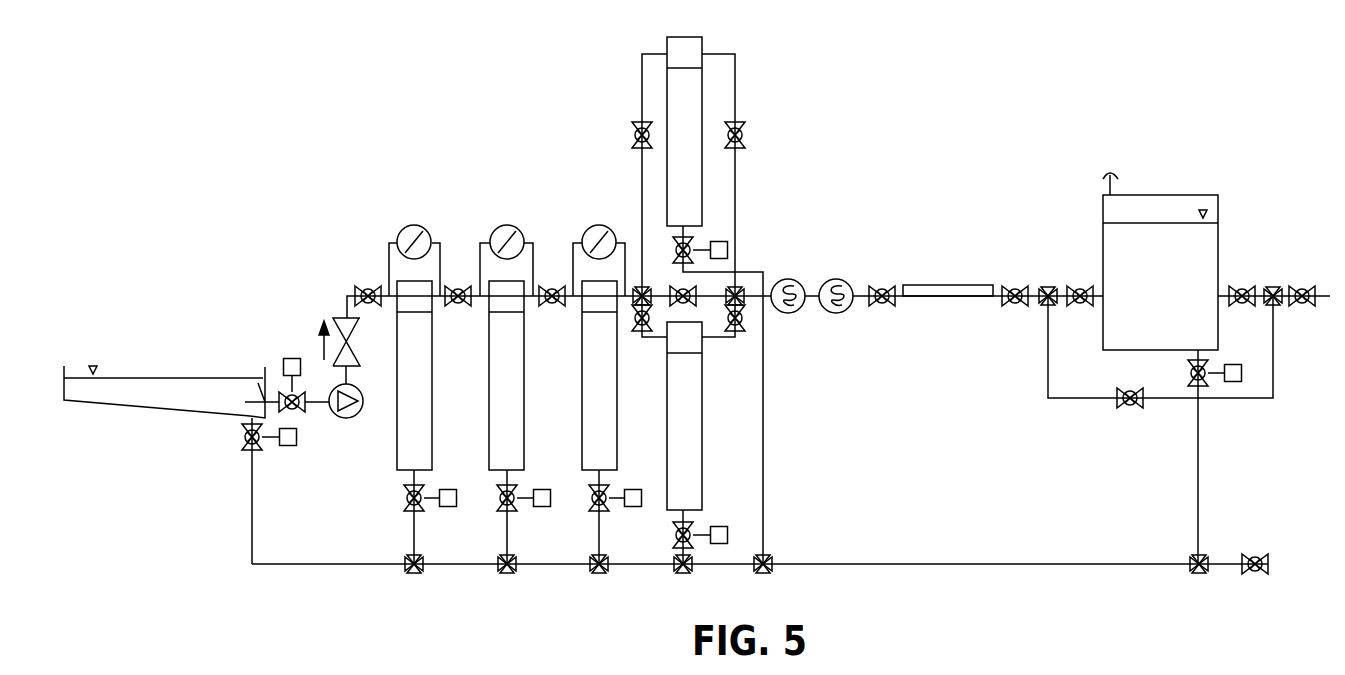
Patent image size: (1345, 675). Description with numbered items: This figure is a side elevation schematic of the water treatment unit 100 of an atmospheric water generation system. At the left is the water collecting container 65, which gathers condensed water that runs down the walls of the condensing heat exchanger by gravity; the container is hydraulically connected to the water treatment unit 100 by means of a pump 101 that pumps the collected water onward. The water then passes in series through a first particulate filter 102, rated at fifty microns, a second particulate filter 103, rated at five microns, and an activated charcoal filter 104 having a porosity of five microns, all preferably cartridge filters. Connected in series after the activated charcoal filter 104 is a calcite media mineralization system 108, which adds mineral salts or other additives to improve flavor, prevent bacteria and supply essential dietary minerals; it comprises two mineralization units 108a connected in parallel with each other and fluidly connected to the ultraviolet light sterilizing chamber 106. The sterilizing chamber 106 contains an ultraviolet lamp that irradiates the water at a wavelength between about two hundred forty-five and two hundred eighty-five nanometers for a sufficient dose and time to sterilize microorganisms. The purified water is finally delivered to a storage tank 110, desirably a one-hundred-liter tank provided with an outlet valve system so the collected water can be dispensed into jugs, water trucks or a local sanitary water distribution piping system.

The water collecting container 65 is at (166, 399).
The water treatment unit 100 is at (456, 568).
The pump 101 is at (327, 390).
The particulate filter 102 is at (405, 415).
The particulate filter 103 is at (497, 415).
The activated charcoal filter 104 is at (590, 415).
The ultraviolet light sterilizing chamber 106 is at (941, 285).
The calcite media mineralization system 108 is at (753, 125).
The mineralization unit 108a is at (680, 165).
The storage tank 110 is at (1202, 256).